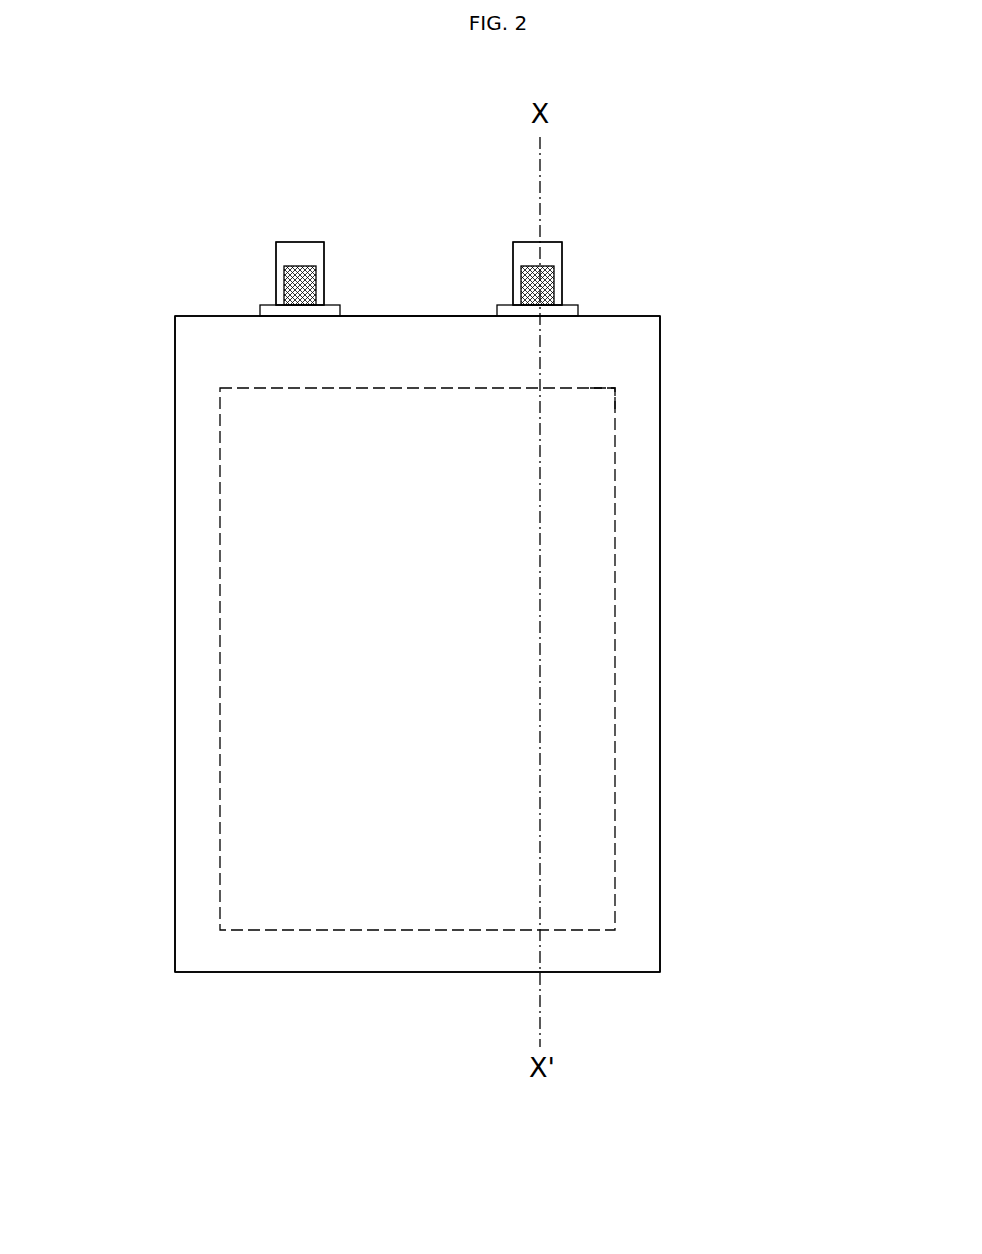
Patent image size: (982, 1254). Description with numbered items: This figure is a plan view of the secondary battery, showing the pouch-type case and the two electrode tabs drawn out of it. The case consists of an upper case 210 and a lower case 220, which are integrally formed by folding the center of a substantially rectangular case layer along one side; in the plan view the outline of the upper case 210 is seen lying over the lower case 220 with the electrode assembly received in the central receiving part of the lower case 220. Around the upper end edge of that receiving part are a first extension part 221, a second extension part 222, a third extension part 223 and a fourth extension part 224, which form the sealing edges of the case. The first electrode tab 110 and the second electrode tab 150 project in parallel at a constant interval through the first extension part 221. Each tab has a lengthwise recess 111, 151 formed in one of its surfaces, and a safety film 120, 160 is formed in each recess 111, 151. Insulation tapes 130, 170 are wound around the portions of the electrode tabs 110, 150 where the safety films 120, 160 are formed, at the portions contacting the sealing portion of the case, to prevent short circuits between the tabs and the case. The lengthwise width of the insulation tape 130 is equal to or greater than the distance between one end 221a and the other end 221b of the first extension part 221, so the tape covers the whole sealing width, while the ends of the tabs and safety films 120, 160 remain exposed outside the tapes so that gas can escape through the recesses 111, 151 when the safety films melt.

The first electrode tab 110 is at (552, 253).
The recess 111 is at (528, 263).
The safety film 120 is at (555, 275).
The insulation tape 130 is at (577, 310).
The second electrode tab 150 is at (287, 250).
The recess 151 is at (307, 263).
The safety film 160 is at (277, 273).
The insulation tape 170 is at (263, 312).
The upper case 210 is at (570, 553).
The lower case 220 is at (670, 850).
The first extension part 221 is at (460, 333).
The one end of first extension part 221a is at (370, 315).
The other end of first extension part 221b is at (590, 390).
The second extension part 222 is at (195, 720).
The third extension part 223 is at (640, 722).
The fourth extension part 224 is at (347, 962).